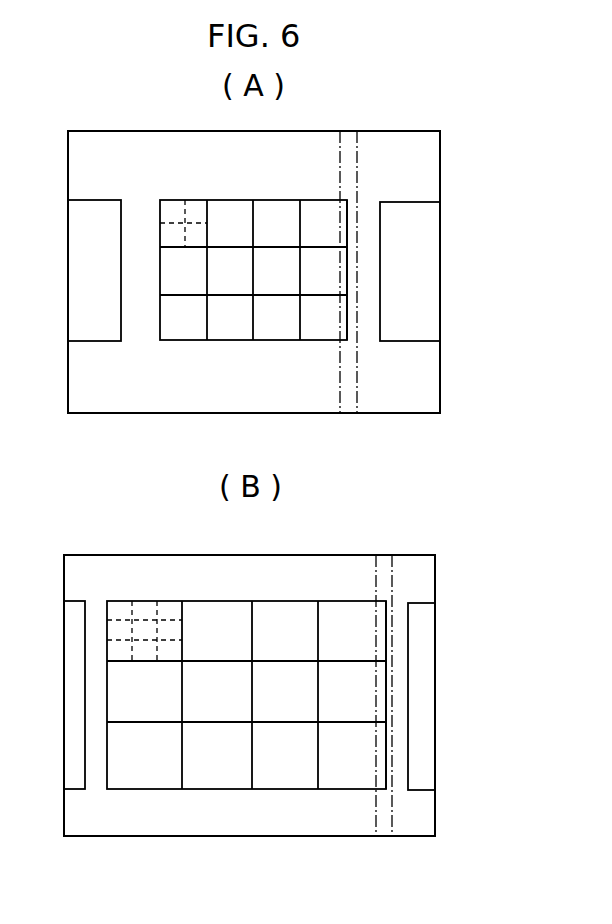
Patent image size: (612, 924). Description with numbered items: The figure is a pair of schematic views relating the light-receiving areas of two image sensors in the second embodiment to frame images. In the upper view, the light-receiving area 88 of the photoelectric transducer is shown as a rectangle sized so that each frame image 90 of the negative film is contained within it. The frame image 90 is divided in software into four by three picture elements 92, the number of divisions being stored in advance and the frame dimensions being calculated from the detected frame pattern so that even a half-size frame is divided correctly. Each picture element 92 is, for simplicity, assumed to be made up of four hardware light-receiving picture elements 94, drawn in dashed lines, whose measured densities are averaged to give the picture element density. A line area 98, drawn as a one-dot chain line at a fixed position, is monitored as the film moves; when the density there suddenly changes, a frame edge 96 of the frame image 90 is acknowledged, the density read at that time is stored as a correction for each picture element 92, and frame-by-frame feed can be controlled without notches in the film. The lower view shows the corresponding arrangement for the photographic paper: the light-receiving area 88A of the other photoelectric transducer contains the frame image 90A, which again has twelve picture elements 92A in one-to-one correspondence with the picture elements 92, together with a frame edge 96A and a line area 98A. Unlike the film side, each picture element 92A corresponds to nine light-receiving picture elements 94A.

The light-receiving area 88 is at (440, 176).
The frame image 90 is at (97, 341).
The picture element 92 is at (241, 212).
The light-receiving picture element 94 is at (175, 208).
The frame edge 96 is at (343, 320).
The line area 98 is at (357, 125).
The light-receiving area 88A is at (435, 578).
The frame image 90A is at (85, 790).
The picture element 92A is at (233, 611).
The light-receiving picture element 94A is at (125, 606).
The frame edge 96A is at (383, 770).
The line area 98A is at (392, 549).